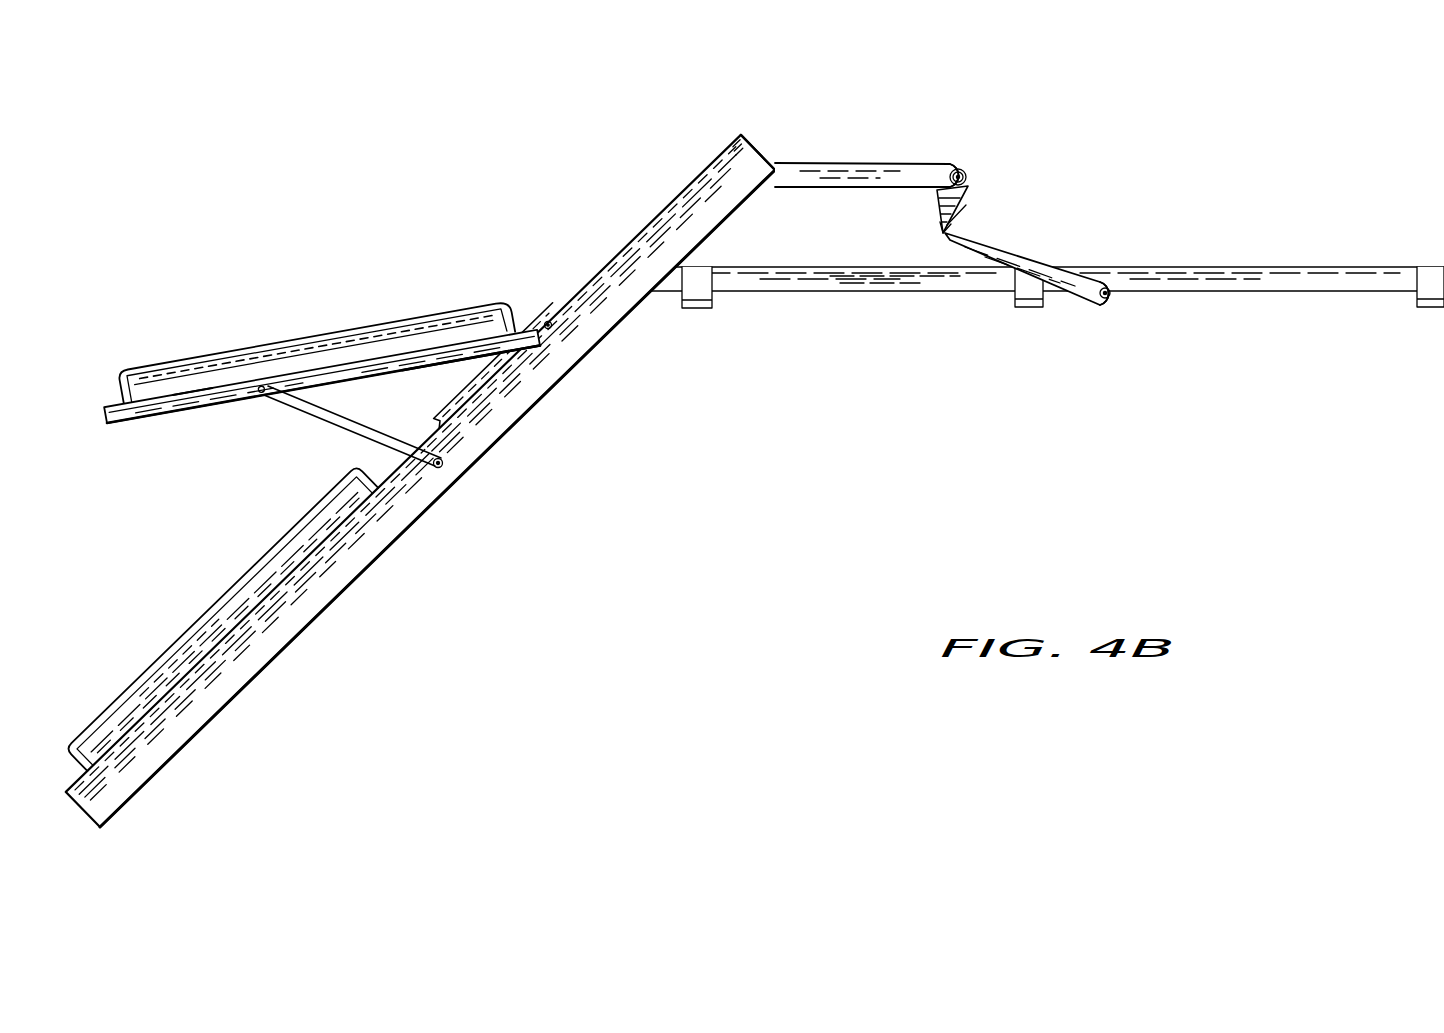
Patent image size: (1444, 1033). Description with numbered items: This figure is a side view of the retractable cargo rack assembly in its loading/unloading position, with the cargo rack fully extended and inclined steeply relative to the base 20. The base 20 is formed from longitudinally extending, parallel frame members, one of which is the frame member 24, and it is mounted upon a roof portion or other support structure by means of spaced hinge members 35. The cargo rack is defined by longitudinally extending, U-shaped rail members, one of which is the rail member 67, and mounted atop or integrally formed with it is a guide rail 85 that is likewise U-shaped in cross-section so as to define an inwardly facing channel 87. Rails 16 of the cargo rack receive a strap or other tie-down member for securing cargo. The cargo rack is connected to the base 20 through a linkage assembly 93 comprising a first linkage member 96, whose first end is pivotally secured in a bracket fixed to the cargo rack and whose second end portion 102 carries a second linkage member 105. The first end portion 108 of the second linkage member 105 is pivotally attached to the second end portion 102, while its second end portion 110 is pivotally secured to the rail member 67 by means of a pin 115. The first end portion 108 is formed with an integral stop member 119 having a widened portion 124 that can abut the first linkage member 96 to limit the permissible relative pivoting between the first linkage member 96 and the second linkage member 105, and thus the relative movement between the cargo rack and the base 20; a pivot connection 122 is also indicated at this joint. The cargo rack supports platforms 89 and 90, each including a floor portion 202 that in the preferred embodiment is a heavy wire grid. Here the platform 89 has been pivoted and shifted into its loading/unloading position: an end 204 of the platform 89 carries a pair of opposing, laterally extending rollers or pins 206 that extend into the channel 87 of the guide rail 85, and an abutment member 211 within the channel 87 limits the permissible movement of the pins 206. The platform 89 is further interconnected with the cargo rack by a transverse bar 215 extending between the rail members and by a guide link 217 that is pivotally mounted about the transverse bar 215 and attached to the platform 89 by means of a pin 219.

The rails 16 is at (392, 305).
The base 20 is at (1179, 295).
The frame member 24 is at (902, 283).
The hinge member 35 is at (1028, 312).
The rail member 67 is at (335, 577).
The guide rail 85 is at (586, 328).
The channel 87 is at (756, 142).
The platform 89 is at (194, 386).
The platform 90 is at (178, 666).
The linkage assembly 93 is at (968, 155).
The first linkage member 96 is at (836, 170).
The second end portion 102 is at (943, 168).
The second linkage member 105 is at (1035, 250).
The first end portion 108 is at (953, 223).
The second end portion 110 is at (1113, 268).
The pin 115 is at (1112, 303).
The stop member 119 is at (942, 215).
The pivot bushing 122 is at (975, 178).
The widened portion 124 is at (935, 198).
The floor portion 202 is at (337, 360).
The end 204 is at (546, 323).
The rollers or pins 206 is at (553, 332).
The abutment member 211 is at (480, 357).
The transverse bar 215 is at (447, 462).
The guide link 217 is at (310, 413).
The pin 219 is at (230, 400).